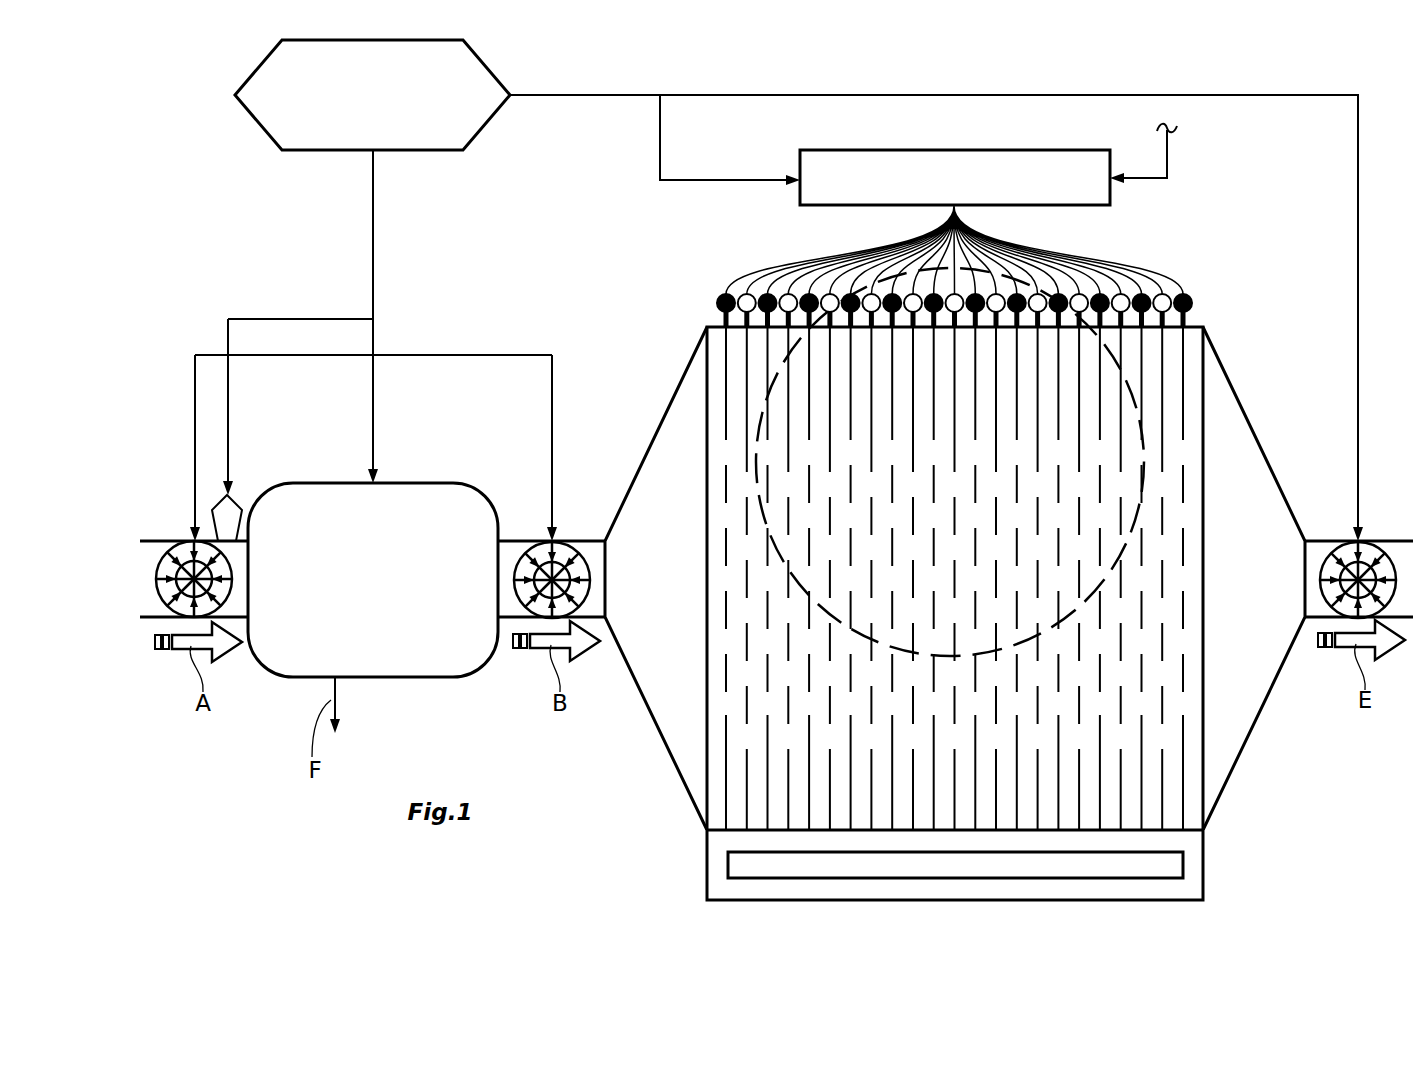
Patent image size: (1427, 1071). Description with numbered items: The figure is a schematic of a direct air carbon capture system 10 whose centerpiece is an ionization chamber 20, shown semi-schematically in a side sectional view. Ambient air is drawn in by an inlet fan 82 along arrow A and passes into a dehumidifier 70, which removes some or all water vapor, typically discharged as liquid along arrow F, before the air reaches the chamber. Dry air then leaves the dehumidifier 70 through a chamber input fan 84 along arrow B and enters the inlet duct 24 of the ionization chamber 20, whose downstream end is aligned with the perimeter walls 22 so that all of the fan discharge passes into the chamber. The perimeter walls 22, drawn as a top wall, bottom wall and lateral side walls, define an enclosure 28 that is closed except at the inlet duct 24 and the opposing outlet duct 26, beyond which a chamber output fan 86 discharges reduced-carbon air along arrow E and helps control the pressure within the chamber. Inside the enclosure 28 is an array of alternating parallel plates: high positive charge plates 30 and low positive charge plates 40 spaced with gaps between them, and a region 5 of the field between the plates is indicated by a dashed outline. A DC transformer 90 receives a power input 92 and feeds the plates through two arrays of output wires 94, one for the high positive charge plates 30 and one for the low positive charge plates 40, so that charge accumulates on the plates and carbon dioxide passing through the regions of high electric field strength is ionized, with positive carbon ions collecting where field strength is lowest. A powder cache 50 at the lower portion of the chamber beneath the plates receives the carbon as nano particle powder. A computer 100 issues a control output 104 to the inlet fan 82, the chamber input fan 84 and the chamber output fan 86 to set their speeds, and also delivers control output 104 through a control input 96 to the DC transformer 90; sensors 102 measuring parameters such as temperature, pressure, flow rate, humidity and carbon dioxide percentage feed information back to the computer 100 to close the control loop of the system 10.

The system 10 is at (186, 225).
The computer 100 is at (372, 95).
The control output 104 is at (580, 95).
The sensors 102 is at (232, 506).
The DC transformer 90 is at (955, 177).
The control input 96 is at (757, 181).
The power input 92 is at (1152, 181).
The output wires 94 is at (905, 246).
The treatment region 5 is at (898, 274).
The perimeter walls 22 is at (1197, 324).
The ionization chamber 20 is at (670, 818).
The inlet duct 24 is at (664, 580).
The outlet duct 26 is at (1247, 580).
The enclosure 28 is at (705, 832).
The powder cache 50 is at (940, 868).
The low positive charge plates 40 is at (768, 725).
The high positive charge plates 30 is at (747, 760).
The dehumidifier 70 is at (373, 580).
The inlet fan 82 is at (163, 604).
The chamber input fan 84 is at (521, 605).
The chamber output fan 86 is at (1325, 605).